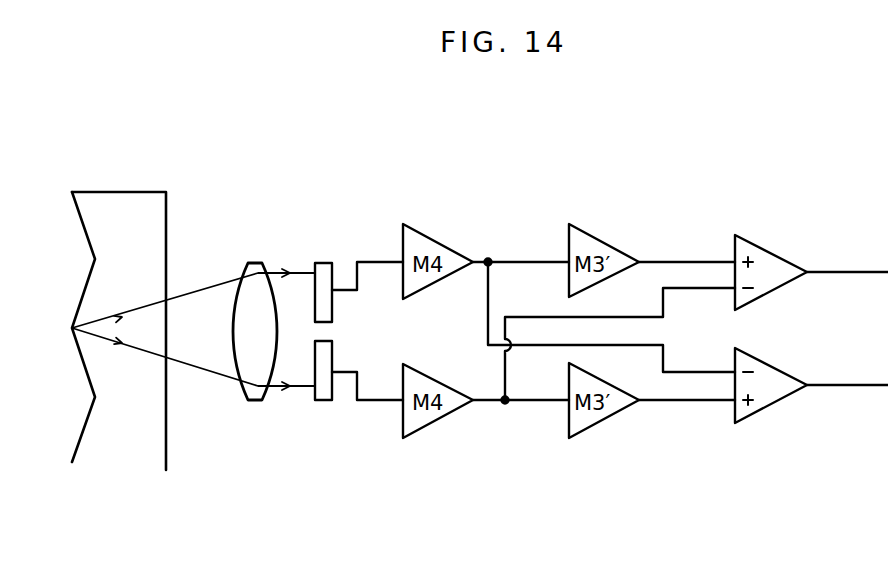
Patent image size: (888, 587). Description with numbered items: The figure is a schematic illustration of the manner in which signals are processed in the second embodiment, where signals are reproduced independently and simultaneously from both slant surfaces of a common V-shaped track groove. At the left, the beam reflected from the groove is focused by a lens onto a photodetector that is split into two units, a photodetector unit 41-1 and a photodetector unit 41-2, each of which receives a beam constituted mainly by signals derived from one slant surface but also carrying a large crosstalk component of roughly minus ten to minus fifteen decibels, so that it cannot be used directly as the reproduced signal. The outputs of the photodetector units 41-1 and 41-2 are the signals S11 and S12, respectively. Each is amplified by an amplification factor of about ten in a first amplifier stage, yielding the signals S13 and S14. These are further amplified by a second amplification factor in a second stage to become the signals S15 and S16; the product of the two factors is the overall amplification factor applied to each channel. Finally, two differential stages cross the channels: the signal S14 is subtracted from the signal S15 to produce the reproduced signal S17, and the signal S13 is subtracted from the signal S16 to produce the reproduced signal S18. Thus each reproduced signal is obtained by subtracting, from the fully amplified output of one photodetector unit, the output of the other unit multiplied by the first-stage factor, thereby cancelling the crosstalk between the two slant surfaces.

The photodetector unit 41-1 is at (300, 268).
The photodetector unit 41-2 is at (300, 392).
The signal S11 is at (367, 264).
The signal S12 is at (367, 400).
The signal S13 is at (521, 252).
The signal S14 is at (521, 412).
The signal S15 is at (687, 249).
The signal S16 is at (687, 412).
The reproduced signal S17 is at (847, 261).
The reproduced signal S18 is at (847, 399).